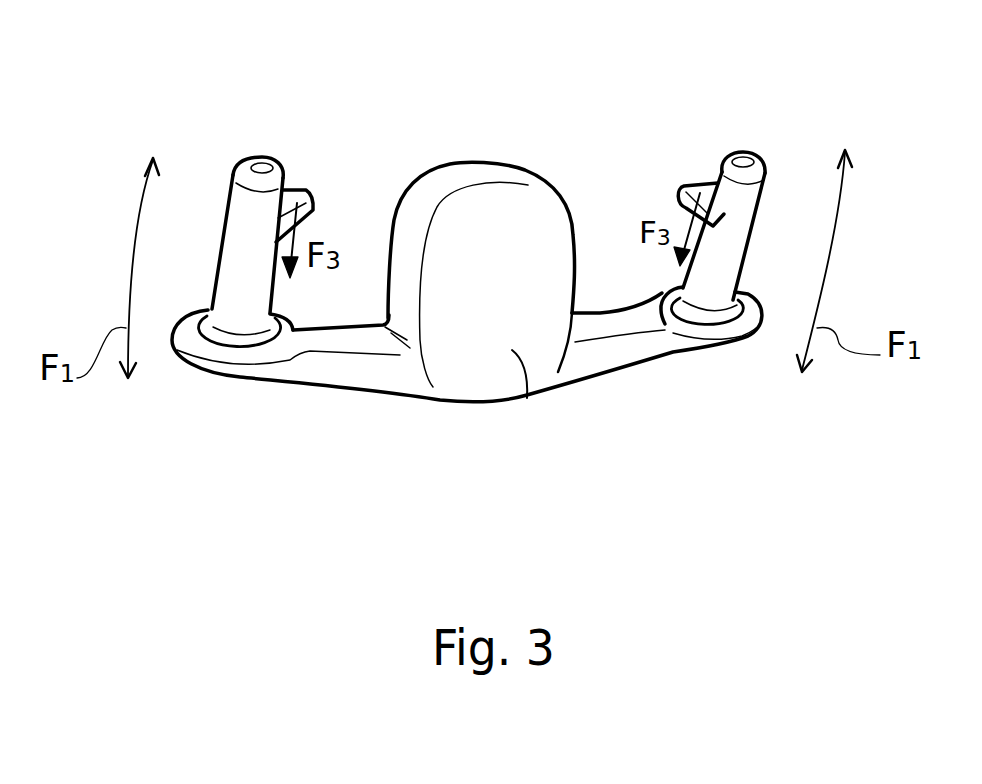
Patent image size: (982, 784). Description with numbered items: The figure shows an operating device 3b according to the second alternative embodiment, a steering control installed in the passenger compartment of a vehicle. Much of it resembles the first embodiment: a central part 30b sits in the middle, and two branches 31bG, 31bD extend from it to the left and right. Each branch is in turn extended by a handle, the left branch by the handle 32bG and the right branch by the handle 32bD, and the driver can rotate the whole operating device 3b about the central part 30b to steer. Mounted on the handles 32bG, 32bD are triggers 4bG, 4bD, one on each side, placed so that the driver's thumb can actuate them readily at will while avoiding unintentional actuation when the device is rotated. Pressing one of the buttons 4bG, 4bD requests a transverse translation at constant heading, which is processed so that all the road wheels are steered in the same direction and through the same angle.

The operating device 3b is at (524, 148).
The central part 30b is at (510, 350).
The left branch 31bG is at (327, 368).
The right branch 31bD is at (643, 350).
The left handle 32bG is at (232, 275).
The right handle 32bD is at (732, 268).
The left trigger 4bG is at (312, 193).
The right trigger 4bD is at (683, 182).